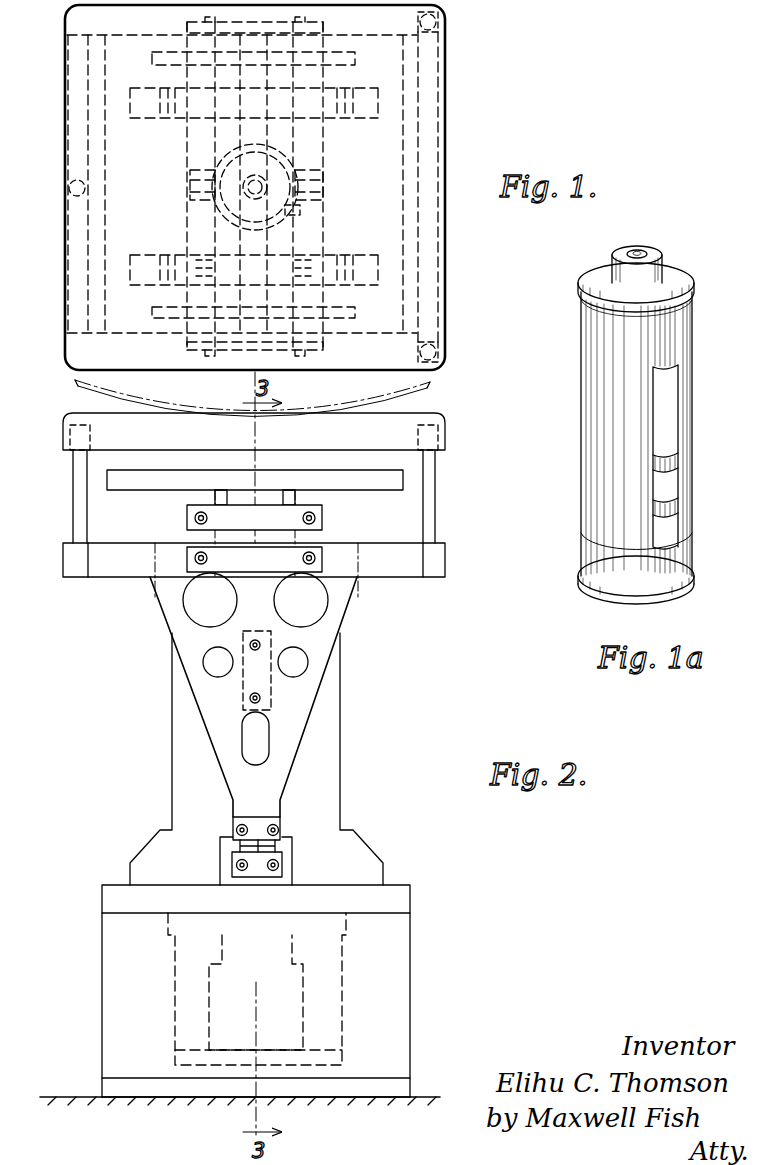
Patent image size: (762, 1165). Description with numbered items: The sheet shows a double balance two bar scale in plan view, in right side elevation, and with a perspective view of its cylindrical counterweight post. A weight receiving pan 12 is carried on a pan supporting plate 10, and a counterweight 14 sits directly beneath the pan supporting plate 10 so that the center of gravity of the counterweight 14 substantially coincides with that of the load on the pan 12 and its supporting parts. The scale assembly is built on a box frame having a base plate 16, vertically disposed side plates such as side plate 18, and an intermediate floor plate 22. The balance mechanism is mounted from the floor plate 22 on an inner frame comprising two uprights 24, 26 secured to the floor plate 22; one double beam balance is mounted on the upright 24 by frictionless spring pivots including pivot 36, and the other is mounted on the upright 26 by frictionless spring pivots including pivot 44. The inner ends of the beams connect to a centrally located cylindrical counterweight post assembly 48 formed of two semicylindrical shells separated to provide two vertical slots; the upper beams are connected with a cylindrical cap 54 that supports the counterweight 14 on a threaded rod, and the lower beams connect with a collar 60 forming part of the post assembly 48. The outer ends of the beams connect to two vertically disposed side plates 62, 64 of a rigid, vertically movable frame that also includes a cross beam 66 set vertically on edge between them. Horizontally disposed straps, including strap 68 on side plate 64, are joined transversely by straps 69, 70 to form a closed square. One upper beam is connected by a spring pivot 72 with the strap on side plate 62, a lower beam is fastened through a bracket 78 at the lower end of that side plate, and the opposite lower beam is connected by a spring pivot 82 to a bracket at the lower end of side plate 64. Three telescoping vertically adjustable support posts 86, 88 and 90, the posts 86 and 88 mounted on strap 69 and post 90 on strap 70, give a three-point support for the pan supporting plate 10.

In FIG. 1, the pan supporting plate 10 is at (447, 178).
In FIG. 2, the pan supporting plate 10 is at (447, 427).
In FIG. 2, the weight receiving pan 12 is at (440, 388).
In FIG. 1, the counterweight 14 is at (407, 140).
In FIG. 2, the counterweight 14 is at (405, 482).
In FIG. 2, the base plate 16 is at (400, 1087).
In FIG. 2, the side plate 18 is at (397, 1001).
In FIG. 2, the intermediate floor plate 22 is at (400, 904).
In FIG. 1, the upright 24 is at (142, 122).
In FIG. 1, the upright 26 is at (138, 255).
In FIG. 2, the upright 26 is at (335, 773).
In FIG. 1, the frictionless spring pivot 36 is at (195, 112).
In FIG. 1, the frictionless spring pivot 44 is at (196, 262).
In FIG. 1, the cylindrical counterweight post assembly 48 is at (295, 163).
In FIG. 1A, the cylindrical counterweight post assembly 48 is at (578, 433).
In FIG. 1A, the cylindrical cap 54 is at (685, 293).
In FIG. 1A, the collar 60 is at (592, 553).
In FIG. 1, the side plate 62 is at (152, 58).
In FIG. 1, the side plate 64 is at (155, 310).
In FIG. 2, the side plate 64 is at (340, 608).
In FIG. 1, the cross beam 66 is at (300, 212).
In FIG. 2, the cross beam 66 is at (272, 696).
In FIG. 2, the strap 68 is at (400, 577).
In FIG. 1, the strap 69 is at (440, 272).
In FIG. 2, the strap 69 is at (440, 564).
In FIG. 1, the strap 70 is at (68, 272).
In FIG. 2, the strap 70 is at (77, 563).
In FIG. 1, the spring pivot 72 is at (187, 27).
In FIG. 1, the bracket 78 is at (187, 348).
In FIG. 2, the bracket 78 is at (197, 538).
In FIG. 2, the spring pivot 82 is at (278, 848).
In FIG. 1, the support post 86 is at (445, 22).
In FIG. 1, the support post 88 is at (445, 350).
In FIG. 2, the support post 88 is at (437, 509).
In FIG. 1, the support post 90 is at (68, 190).
In FIG. 2, the support post 90 is at (77, 497).